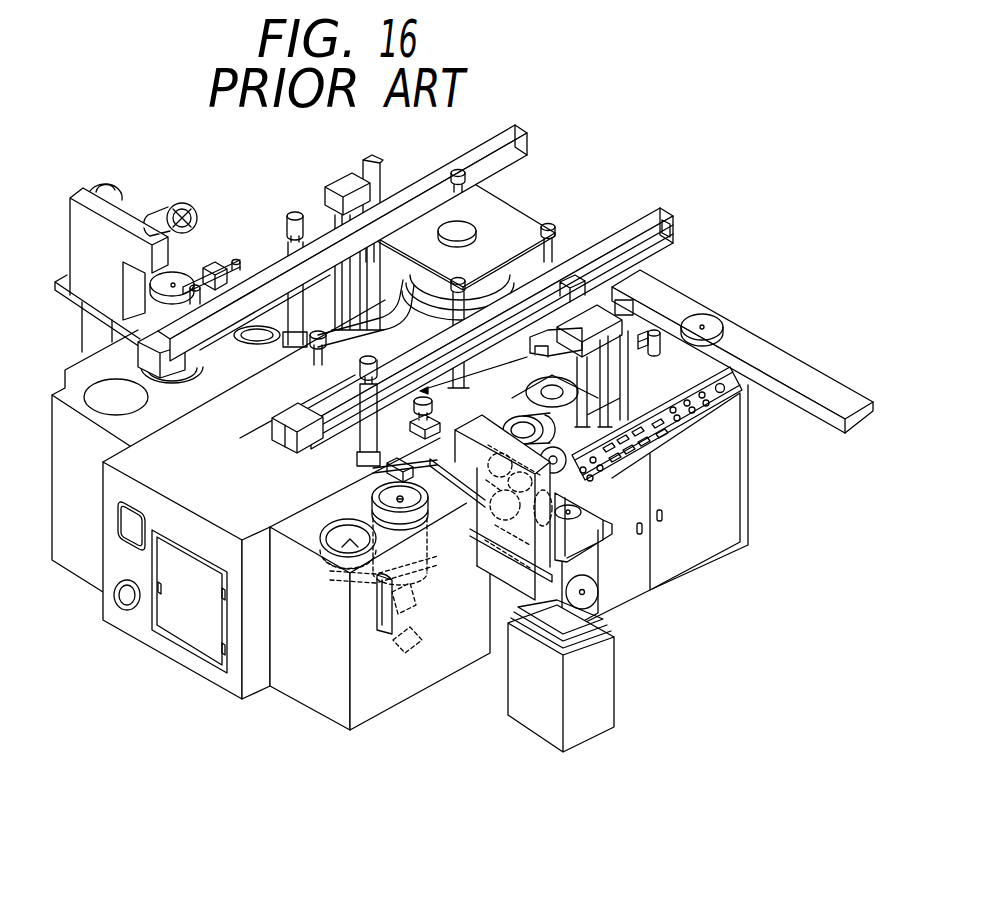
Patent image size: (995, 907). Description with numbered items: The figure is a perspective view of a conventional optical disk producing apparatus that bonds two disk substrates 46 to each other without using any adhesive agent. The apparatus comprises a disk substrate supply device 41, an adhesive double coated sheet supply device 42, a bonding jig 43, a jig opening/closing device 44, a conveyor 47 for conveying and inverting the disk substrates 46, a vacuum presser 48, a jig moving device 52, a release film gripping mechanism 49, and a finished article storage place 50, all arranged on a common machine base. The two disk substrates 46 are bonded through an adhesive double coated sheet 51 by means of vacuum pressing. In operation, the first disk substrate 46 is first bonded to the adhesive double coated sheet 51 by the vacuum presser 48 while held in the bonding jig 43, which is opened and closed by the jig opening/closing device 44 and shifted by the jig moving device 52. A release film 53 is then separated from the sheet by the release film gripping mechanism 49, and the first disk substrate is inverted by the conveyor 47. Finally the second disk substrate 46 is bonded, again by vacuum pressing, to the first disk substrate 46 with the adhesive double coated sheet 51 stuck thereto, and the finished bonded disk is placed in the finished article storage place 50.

The disk substrate supply device 41 is at (320, 526).
The adhesive double coated sheet supply device 42 is at (515, 525).
The bonding jig 43 is at (526, 349).
The jig opening/closing device 44 is at (596, 320).
The disk substrates 46 is at (407, 505).
The conveyor 47 is at (320, 444).
The vacuum presser 48 is at (505, 231).
The release film gripping mechanism 49 is at (668, 348).
The finished article storage place 50 is at (744, 339).
The adhesive double coated sheet 51 is at (588, 507).
The jig moving device 52 is at (358, 407).
The release film 53 is at (433, 468).